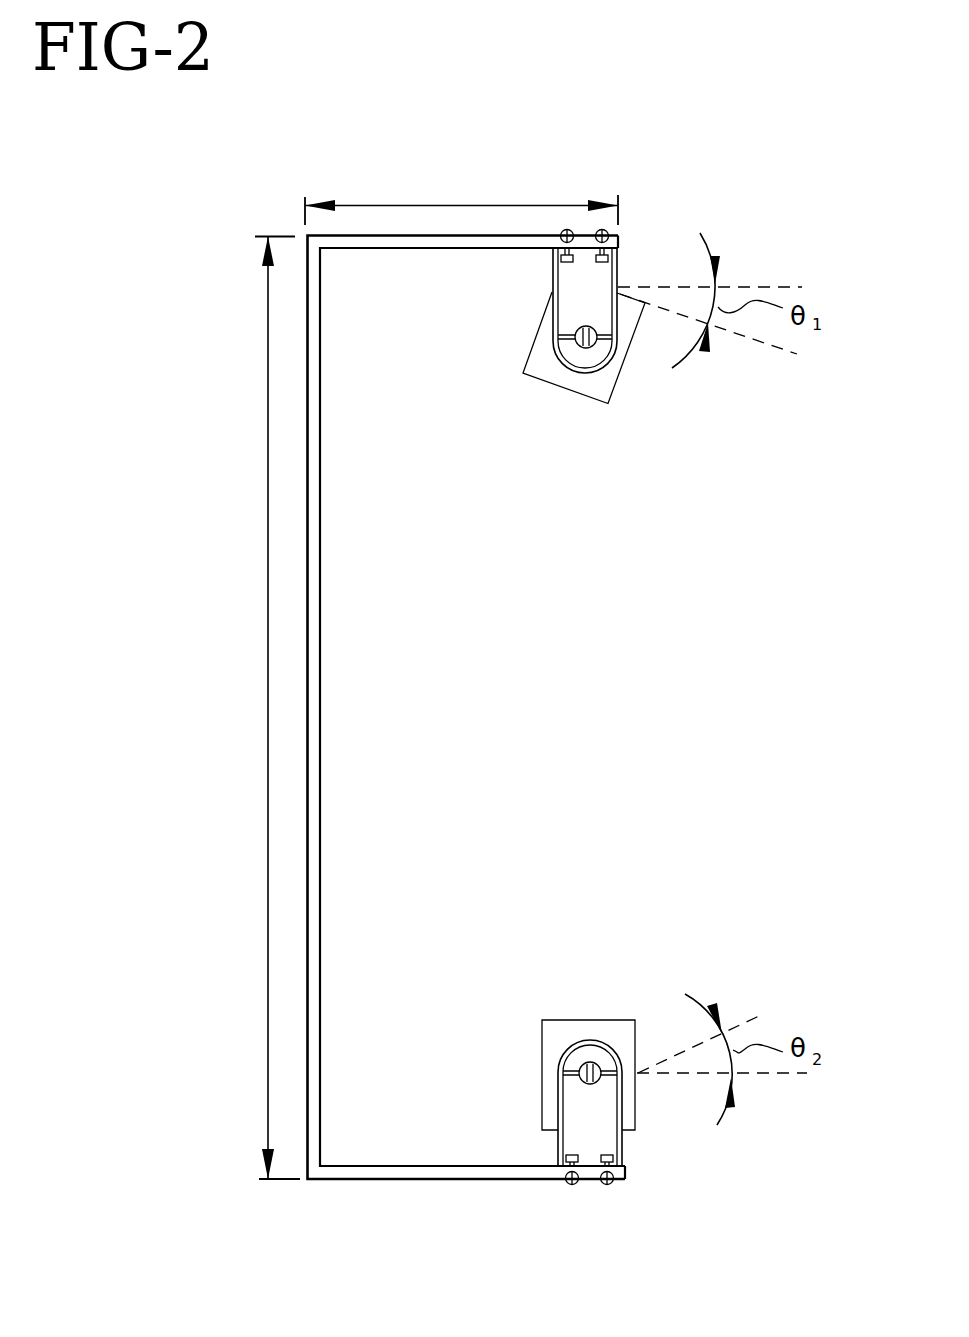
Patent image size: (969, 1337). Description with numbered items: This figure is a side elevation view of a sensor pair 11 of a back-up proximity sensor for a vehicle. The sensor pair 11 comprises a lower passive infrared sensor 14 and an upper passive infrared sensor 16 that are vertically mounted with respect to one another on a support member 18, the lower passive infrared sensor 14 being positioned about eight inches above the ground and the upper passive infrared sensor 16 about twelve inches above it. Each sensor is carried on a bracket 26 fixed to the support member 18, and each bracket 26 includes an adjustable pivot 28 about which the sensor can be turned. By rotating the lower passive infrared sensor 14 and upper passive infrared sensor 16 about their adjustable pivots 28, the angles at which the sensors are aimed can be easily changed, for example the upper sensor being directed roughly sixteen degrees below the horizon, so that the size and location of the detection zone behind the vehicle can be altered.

The sensor pair 11 is at (810, 640).
The lower passive infrared sensor 14 is at (558, 1020).
The upper passive infrared sensor 16 is at (523, 373).
The support member 18 is at (321, 862).
The brackets 26 is at (553, 267).
The adjustable pivot 28 is at (577, 333).